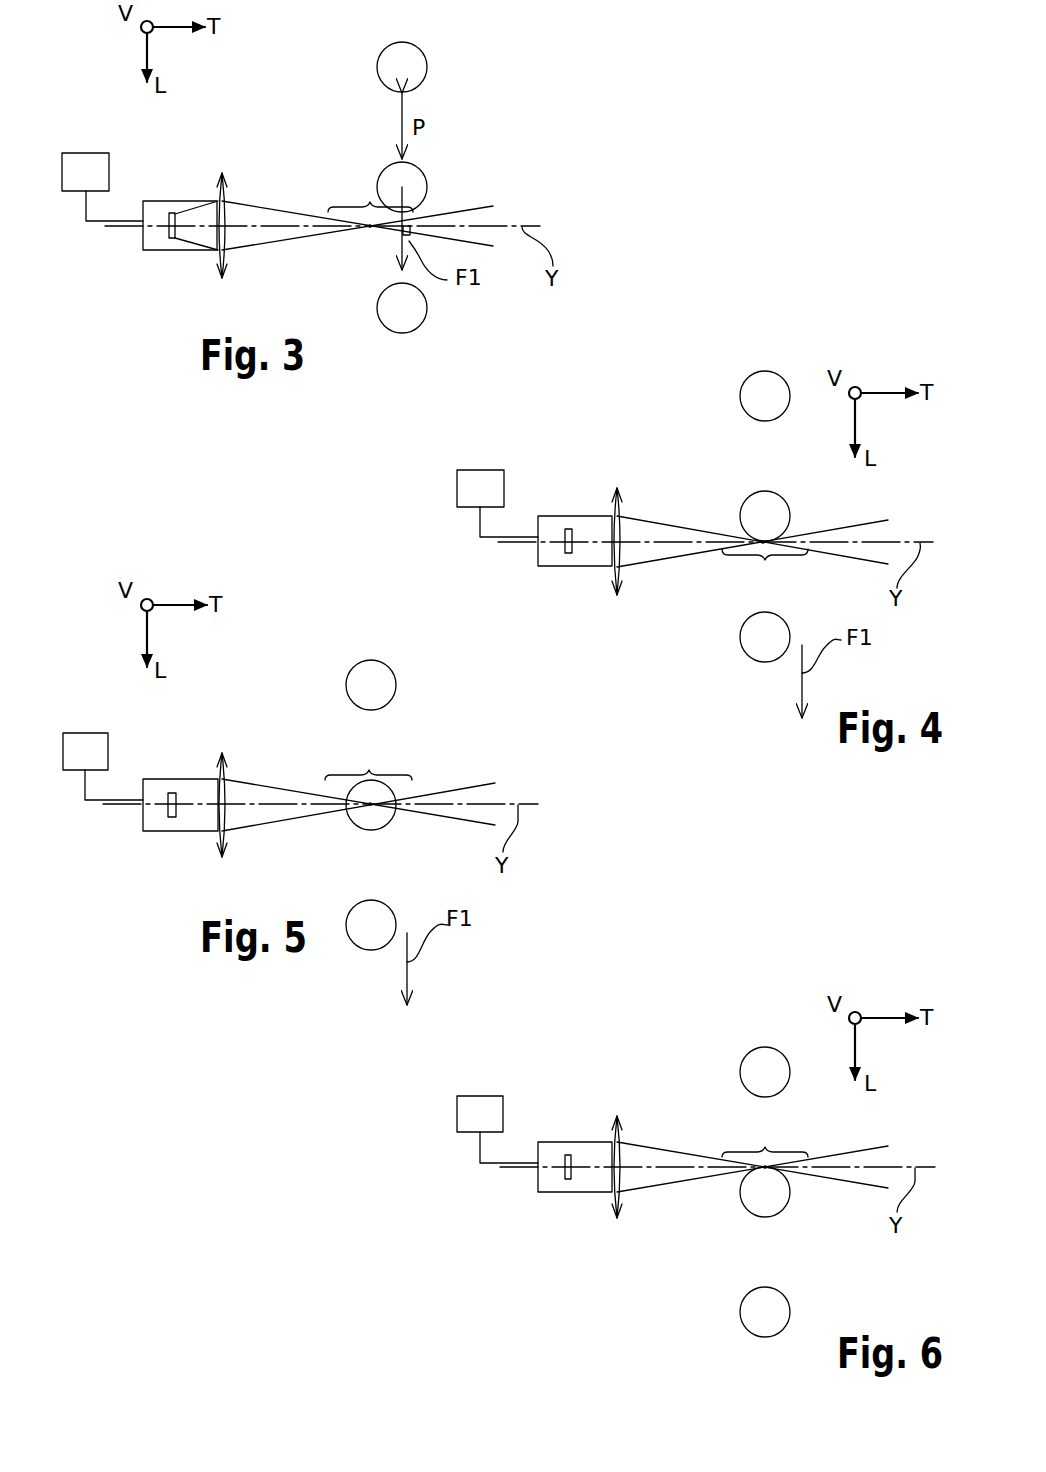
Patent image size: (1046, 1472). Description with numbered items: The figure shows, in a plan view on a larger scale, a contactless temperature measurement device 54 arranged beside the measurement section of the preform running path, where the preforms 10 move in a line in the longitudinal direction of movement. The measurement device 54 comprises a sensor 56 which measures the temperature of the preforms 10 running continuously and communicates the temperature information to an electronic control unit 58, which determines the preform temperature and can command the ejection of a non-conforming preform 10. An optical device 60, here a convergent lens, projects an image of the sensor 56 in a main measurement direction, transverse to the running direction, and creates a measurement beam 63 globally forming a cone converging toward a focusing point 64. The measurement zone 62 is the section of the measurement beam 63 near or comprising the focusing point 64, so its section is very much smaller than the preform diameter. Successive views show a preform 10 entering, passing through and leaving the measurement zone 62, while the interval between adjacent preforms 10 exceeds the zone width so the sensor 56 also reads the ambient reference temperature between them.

In FIG. 3, the preform 10 is at (412, 182).
In FIG. 4, the preform 10 is at (773, 515).
In FIG. 5, the preform 10 is at (391, 826).
In FIG. 6, the preform 10 is at (765, 1192).
In FIG. 3, the measurement device 54 is at (152, 276).
In FIG. 4, the measurement device 54 is at (571, 584).
In FIG. 5, the measurement device 54 is at (186, 766).
In FIG. 6, the measurement device 54 is at (557, 1204).
In FIG. 3, the sensor 56 is at (181, 213).
In FIG. 4, the sensor 56 is at (568, 541).
In FIG. 5, the sensor 56 is at (170, 812).
In FIG. 6, the sensor 56 is at (568, 1167).
In FIG. 3, the electronic control unit 58 is at (93, 168).
In FIG. 4, the electronic control unit 58 is at (497, 503).
In FIG. 5, the electronic control unit 58 is at (103, 766).
In FIG. 6, the electronic control unit 58 is at (497, 1129).
In FIG. 3, the optical device 60 is at (223, 216).
In FIG. 4, the optical device 60 is at (617, 541).
In FIG. 5, the optical device 60 is at (222, 805).
In FIG. 6, the optical device 60 is at (617, 1167).
In FIG. 3, the measurement zone 62 is at (372, 205).
In FIG. 4, the measurement zone 62 is at (765, 572).
In FIG. 5, the measurement zone 62 is at (368, 761).
In FIG. 6, the measurement zone 62 is at (765, 1136).
In FIG. 3, the measurement beam 63 is at (285, 240).
In FIG. 4, the measurement beam 63 is at (752, 541).
In FIG. 5, the measurement beam 63 is at (358, 805).
In FIG. 6, the measurement beam 63 is at (752, 1167).
In FIG. 3, the focusing point 64 is at (372, 229).
In FIG. 4, the focusing point 64 is at (763, 541).
In FIG. 5, the focusing point 64 is at (372, 808).
In FIG. 6, the focusing point 64 is at (765, 1169).